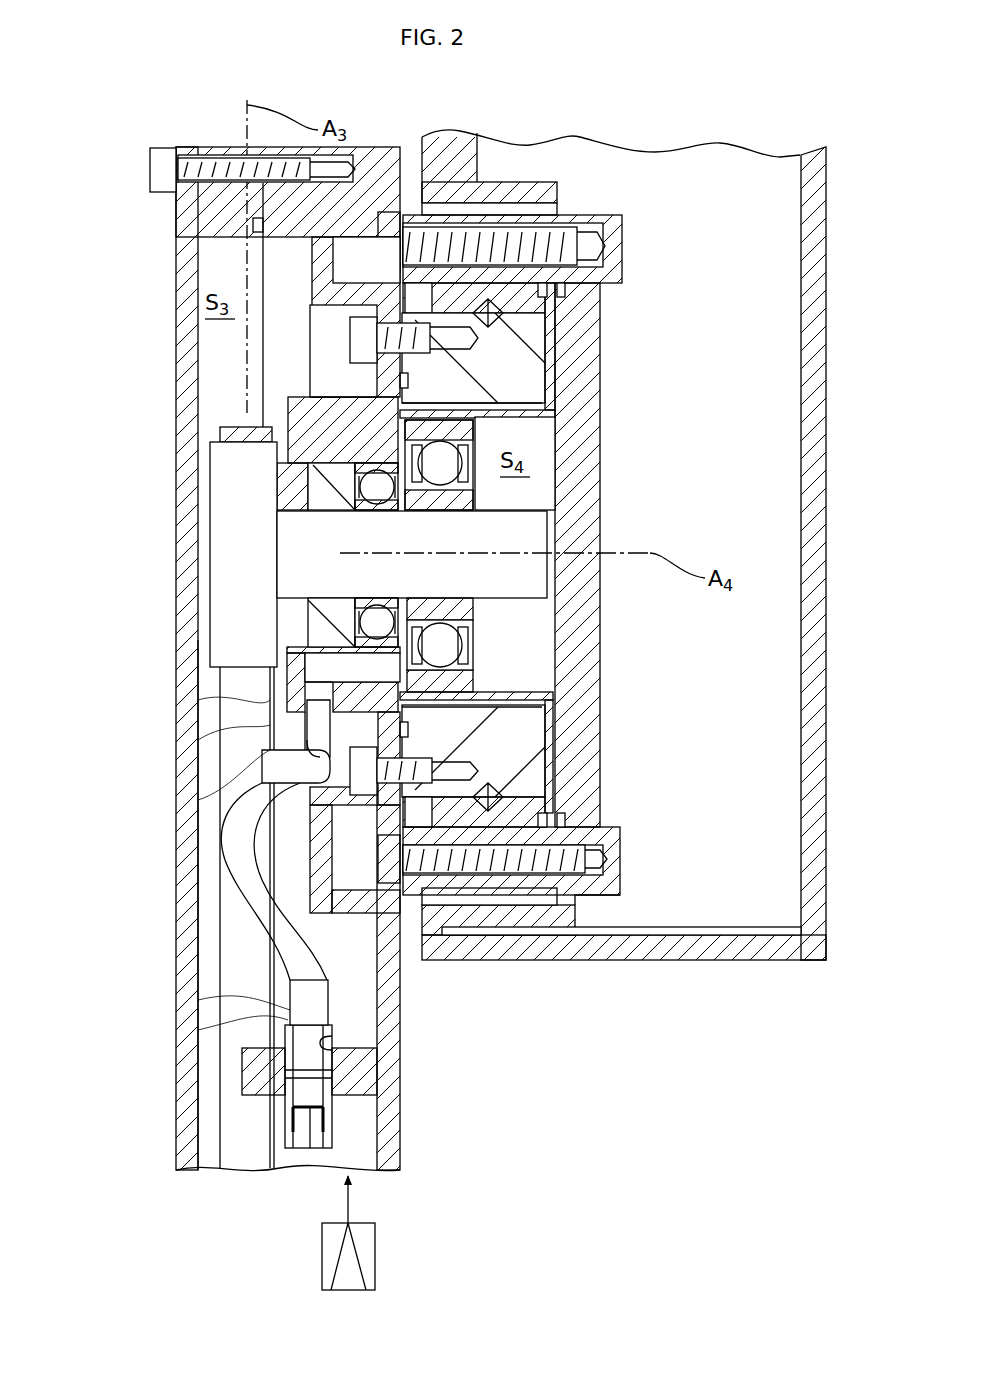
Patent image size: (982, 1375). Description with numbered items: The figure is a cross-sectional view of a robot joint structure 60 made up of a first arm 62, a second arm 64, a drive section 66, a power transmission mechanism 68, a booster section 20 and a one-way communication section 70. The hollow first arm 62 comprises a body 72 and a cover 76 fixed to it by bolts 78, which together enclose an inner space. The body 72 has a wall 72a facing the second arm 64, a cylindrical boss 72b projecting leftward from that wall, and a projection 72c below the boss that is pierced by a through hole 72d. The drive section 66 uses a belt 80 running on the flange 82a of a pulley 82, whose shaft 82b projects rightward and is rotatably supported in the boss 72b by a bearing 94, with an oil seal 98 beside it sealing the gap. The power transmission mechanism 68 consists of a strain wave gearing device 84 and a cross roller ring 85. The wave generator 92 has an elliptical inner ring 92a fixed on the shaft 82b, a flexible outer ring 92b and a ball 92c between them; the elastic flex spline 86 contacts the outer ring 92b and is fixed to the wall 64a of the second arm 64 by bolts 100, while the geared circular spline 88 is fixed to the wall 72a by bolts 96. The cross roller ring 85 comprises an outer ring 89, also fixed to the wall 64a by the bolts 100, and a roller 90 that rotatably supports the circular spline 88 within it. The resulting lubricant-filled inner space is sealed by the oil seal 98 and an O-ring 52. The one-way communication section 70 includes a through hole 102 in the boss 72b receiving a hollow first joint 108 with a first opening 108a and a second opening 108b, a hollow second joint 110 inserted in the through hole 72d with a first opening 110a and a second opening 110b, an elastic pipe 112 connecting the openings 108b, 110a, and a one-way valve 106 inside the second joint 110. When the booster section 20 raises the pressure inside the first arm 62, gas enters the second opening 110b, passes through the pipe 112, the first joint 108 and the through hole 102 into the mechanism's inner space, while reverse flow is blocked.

The booster section 20 is at (376, 1256).
The O-ring 52 is at (545, 745).
The joint structure 60 is at (858, 117).
The first arm 62 is at (166, 605).
The second arm 64 is at (762, 990).
The wall 64a is at (597, 580).
The drive section 66 is at (226, 396).
The power transmission mechanism 68 is at (562, 446).
The one-way communication section 70 is at (240, 905).
The body 72 is at (374, 146).
The wall 72a is at (392, 1000).
The cylindrical boss 72b is at (300, 462).
The projection 72c is at (248, 1070).
The through hole 72d is at (334, 1050).
The cover 76 is at (188, 860).
The bolts 78 is at (152, 166).
The belt 80 is at (336, 795).
The pulley 82 is at (323, 547).
The flange 82a is at (262, 644).
The shaft 82b is at (508, 544).
The strain wave gearing device 84 is at (482, 483).
The cross roller ring 85 is at (527, 220).
The flex spline 86 is at (556, 412).
The circular spline 88 is at (512, 352).
The outer ring 89 is at (550, 290).
The roller 90 is at (498, 312).
The wave generator 92 is at (553, 647).
The inner ring 92a is at (447, 610).
The outer ring 92b is at (450, 683).
The ball 92c is at (445, 648).
The bearing 94 is at (378, 620).
The bolts 96 is at (356, 335).
The oil seal 98 is at (326, 486).
The bolts 100 is at (587, 226).
The through hole 102 is at (318, 660).
The one-way valve 106 is at (306, 1150).
The first joint 108 is at (292, 766).
The first opening 108a is at (318, 690).
The second opening 108b is at (282, 742).
The second joint 110 is at (215, 1121).
The first opening 110a is at (305, 988).
The second opening 110b is at (320, 1152).
The pipe 112 is at (262, 870).